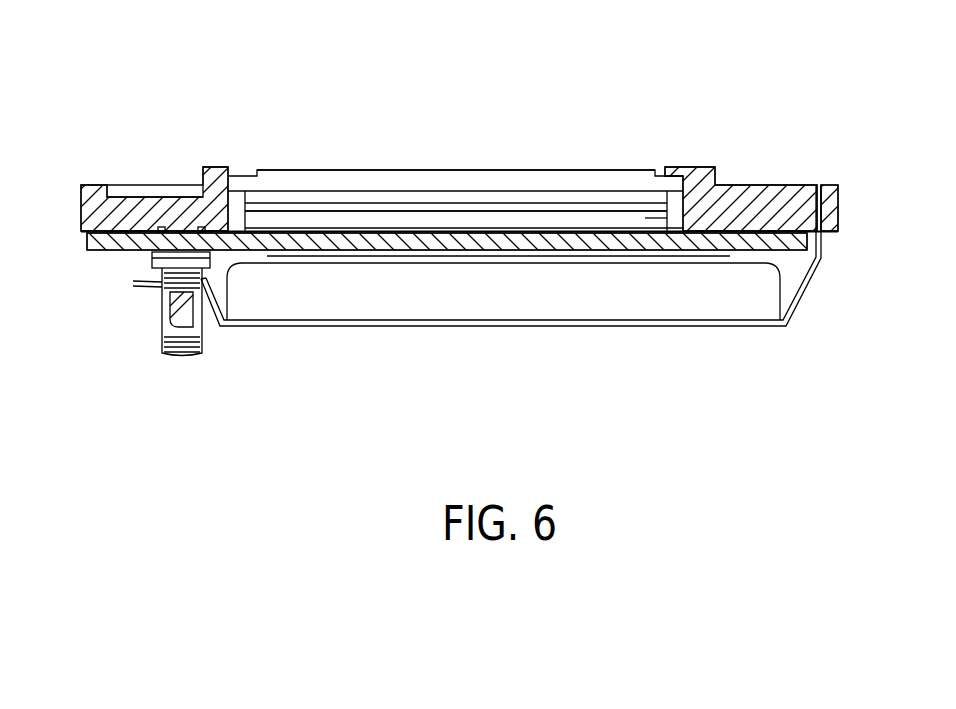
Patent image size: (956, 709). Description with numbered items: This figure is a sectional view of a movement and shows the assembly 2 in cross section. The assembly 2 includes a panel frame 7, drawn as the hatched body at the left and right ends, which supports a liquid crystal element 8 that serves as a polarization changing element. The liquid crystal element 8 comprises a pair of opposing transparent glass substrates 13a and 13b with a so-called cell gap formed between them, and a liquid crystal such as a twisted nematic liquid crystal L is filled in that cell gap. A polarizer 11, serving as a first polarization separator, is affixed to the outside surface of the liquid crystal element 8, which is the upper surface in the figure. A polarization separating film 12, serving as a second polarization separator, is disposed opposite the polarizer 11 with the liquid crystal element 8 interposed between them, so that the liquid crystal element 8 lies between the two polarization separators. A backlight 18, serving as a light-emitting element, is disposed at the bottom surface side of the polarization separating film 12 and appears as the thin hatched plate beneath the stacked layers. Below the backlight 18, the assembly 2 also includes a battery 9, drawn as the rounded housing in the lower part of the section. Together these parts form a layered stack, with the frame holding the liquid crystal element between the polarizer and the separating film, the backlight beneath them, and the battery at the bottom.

The assembly 2 is at (459, 200).
The panel frame 7 is at (783, 183).
The liquid crystal element 8 is at (438, 115).
The battery 9 is at (645, 292).
The polarizer 11 is at (502, 168).
The polarization separating film 12 is at (378, 210).
The transparent glass substrate 13a is at (340, 182).
The transparent glass substrate 13b is at (273, 196).
The backlight 18 is at (512, 218).
The twisted nematic liquid crystal L is at (303, 186).